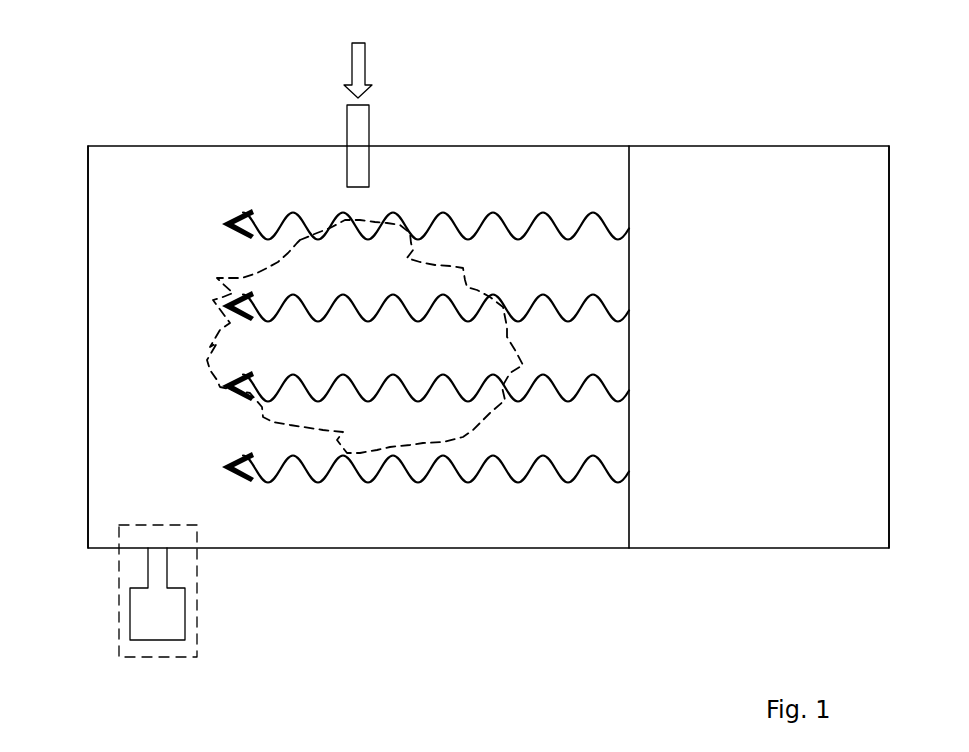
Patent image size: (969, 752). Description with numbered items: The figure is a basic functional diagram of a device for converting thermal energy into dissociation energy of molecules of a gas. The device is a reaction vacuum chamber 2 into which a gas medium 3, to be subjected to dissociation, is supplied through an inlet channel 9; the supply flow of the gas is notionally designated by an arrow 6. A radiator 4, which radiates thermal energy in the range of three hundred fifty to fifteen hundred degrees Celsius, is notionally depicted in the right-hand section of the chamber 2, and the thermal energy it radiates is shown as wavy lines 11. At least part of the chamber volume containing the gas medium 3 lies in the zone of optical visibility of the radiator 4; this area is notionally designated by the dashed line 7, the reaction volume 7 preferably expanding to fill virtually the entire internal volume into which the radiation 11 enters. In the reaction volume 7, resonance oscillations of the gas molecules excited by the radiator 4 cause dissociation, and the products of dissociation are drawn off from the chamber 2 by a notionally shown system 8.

The reaction vacuum chamber 2 is at (482, 146).
The gas medium 3 is at (108, 181).
The radiator 4 is at (805, 146).
The arrow 6 is at (358, 53).
The reaction volume 7 is at (302, 243).
The system for drawing off at least one product of dissociation 8 is at (120, 624).
The inlet channel 9 is at (346, 118).
The wavy line 11 is at (591, 214).